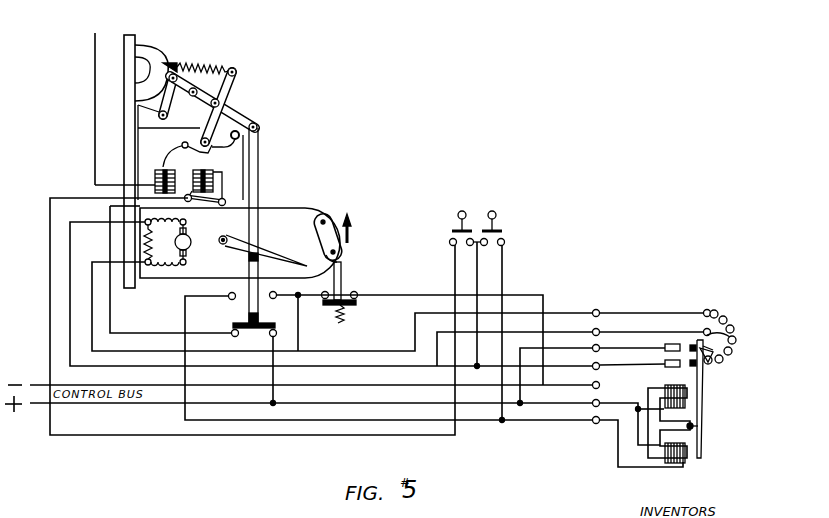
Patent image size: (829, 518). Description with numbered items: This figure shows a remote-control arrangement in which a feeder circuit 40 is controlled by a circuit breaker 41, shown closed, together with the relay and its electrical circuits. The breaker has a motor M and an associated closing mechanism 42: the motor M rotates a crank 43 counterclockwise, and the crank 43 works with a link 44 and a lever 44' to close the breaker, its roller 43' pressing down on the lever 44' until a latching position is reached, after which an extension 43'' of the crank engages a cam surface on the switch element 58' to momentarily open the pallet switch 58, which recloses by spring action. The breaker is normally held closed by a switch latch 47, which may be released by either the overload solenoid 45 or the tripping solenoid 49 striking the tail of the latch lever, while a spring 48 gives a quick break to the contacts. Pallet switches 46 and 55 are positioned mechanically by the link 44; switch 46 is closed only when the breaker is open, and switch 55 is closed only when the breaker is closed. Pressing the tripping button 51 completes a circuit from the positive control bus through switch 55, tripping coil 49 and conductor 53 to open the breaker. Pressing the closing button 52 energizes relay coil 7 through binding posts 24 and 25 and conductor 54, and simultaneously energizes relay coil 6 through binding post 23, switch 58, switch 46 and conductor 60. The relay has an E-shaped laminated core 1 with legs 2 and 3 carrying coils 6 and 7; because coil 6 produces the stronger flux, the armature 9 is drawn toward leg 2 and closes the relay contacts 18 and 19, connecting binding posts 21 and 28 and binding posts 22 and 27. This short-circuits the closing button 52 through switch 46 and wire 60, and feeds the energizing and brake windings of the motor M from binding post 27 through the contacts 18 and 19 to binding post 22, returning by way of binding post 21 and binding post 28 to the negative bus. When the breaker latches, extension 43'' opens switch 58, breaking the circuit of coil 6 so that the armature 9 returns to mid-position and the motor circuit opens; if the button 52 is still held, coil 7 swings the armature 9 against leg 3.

The feeder circuit 40 is at (112, 58).
The circuit breaker 41 is at (152, 64).
The spring 48 is at (196, 70).
The crank 43 is at (259, 165).
The roller 43' is at (363, 231).
The extension 43'' is at (359, 254).
The overload solenoid 45 is at (156, 164).
The switch latch 47 is at (214, 147).
The tripping solenoid 49 is at (204, 202).
The conductor 53 is at (238, 316).
The motor mechanism 42 is at (297, 208).
The motor M is at (180, 242).
The link 44 is at (268, 226).
The lever 44' is at (263, 250).
The switch element 58' is at (355, 281).
The pallet switch 58 is at (407, 339).
The pallet switch 46 is at (224, 292).
The conductor 60 is at (185, 320).
The pallet switch 55 is at (193, 306).
The tripping button 51 is at (465, 241).
The closing button 52 is at (490, 290).
The conductor 54 is at (506, 292).
The binding post 21 is at (642, 308).
The binding post 22 is at (643, 327).
The binding post 27 is at (592, 370).
The binding post 28 is at (620, 361).
The binding post 23 is at (588, 380).
The binding post 24 is at (619, 416).
The binding post 25 is at (629, 436).
The relay contacts 19 is at (665, 352).
The relay contacts 18 is at (712, 360).
The magnetic core 1 is at (669, 423).
The leg 2 is at (679, 396).
The energizing coil 6 is at (680, 386).
The energizing coil 7 is at (672, 463).
The armature 9 is at (700, 427).
The leg 3 is at (688, 458).